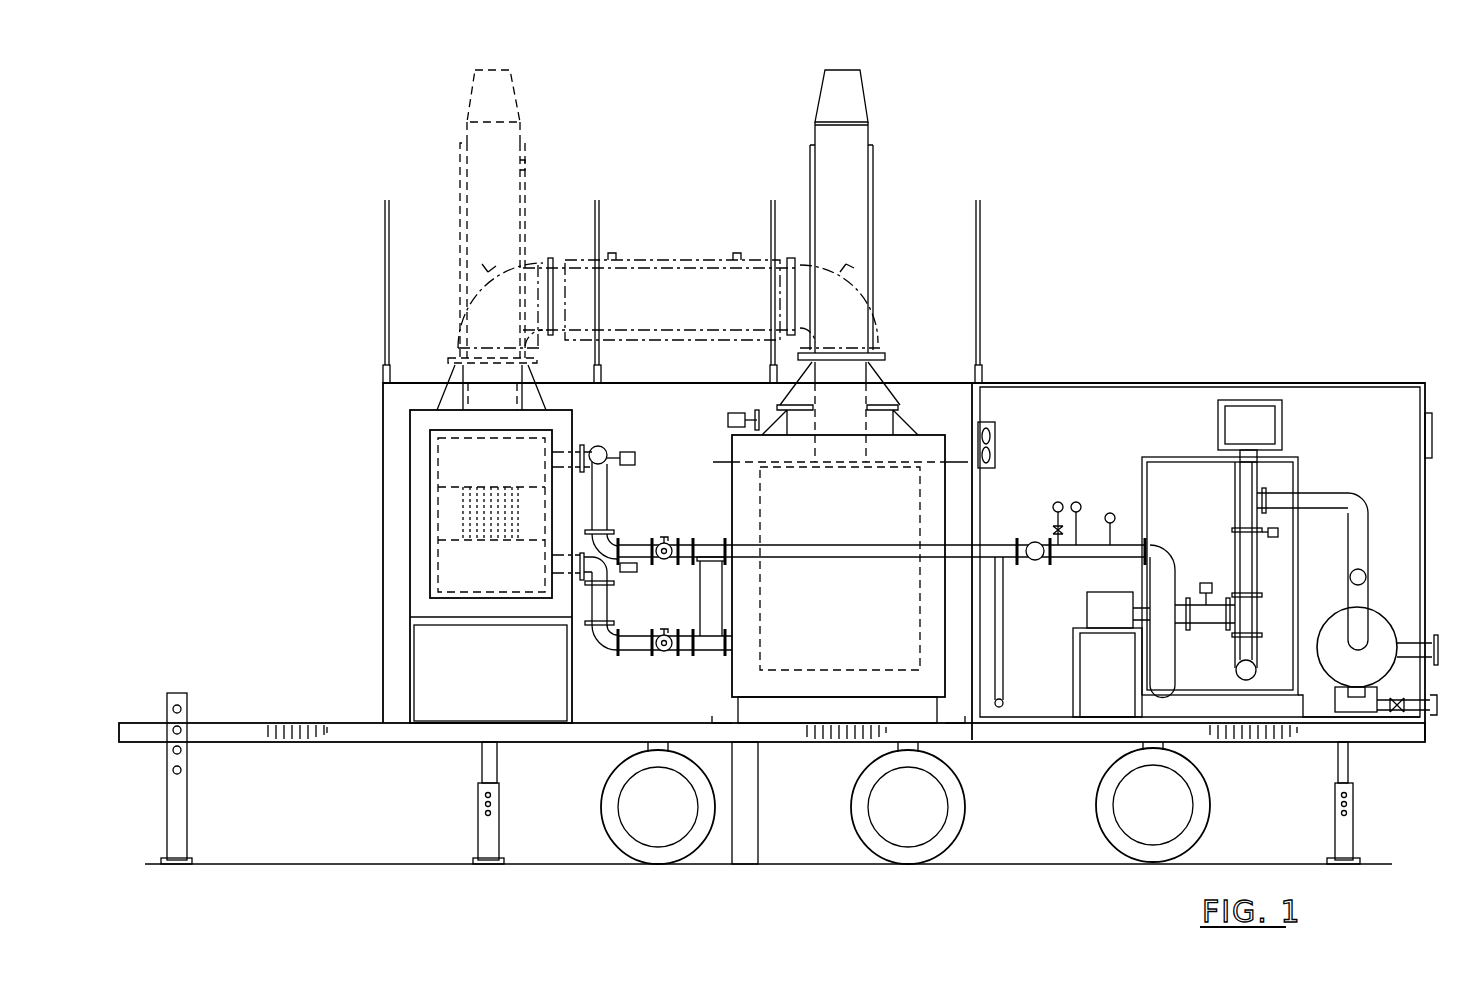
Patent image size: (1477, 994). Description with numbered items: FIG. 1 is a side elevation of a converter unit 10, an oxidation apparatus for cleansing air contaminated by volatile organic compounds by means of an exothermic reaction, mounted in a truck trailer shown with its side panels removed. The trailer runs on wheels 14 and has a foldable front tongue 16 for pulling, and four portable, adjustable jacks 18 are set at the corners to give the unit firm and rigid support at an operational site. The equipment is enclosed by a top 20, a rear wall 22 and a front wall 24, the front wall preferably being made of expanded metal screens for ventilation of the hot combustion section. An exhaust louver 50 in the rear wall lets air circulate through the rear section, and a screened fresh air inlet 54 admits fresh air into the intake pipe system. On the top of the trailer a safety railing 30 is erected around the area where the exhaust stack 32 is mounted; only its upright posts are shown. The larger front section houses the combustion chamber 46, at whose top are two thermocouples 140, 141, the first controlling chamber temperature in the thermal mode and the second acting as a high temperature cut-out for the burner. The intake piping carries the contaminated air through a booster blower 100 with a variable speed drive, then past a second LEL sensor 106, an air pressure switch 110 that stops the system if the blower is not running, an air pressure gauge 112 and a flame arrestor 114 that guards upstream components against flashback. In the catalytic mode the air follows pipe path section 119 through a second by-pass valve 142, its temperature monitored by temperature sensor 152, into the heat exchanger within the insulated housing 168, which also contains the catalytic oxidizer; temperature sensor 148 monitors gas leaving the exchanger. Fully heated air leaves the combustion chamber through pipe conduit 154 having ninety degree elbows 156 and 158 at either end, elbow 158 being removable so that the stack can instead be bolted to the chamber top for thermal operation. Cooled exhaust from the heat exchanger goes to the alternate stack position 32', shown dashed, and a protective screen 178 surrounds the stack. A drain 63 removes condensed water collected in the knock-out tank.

The converter unit 10 is at (1133, 346).
The wheels 14 is at (962, 800).
The foldable front tongue 16 is at (245, 722).
The adjustable jacks 18 is at (498, 838).
The top 20 is at (1191, 383).
The rear wall 22 is at (1426, 568).
The front wall 24 is at (383, 513).
The safety railing 30 is at (386, 226).
The exhaust stack 32 is at (846, 266).
The exhaust stack 32' is at (515, 240).
The combustion chamber 46 is at (732, 490).
The exhaust louver 50 is at (1433, 442).
The fresh air inlet 54 is at (1265, 400).
The drain 63 is at (1397, 714).
The booster blower 100 is at (1177, 576).
The second LEL sensor 106 is at (1110, 512).
The air pressure switch 110 is at (1076, 501).
The air pressure gauge 112 is at (1056, 501).
The flame arrestor 114 is at (1036, 560).
The second pipe path section 119 is at (608, 494).
The thermocouple 140 is at (737, 412).
The thermocouple 141 is at (737, 405).
The second by-pass valve 142 is at (666, 652).
The temperature sensor 148 is at (630, 560).
The temperature sensor 152 is at (636, 458).
The pipe conduit 154 is at (676, 273).
The 90 degree elbow 156 is at (458, 318).
The 90 degree elbow 158 is at (878, 312).
The insulated housing 168 is at (412, 457).
The protective screen 178 is at (873, 250).